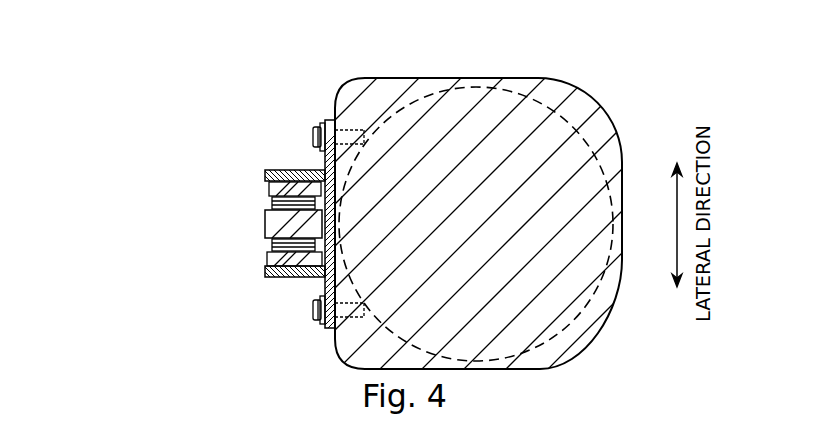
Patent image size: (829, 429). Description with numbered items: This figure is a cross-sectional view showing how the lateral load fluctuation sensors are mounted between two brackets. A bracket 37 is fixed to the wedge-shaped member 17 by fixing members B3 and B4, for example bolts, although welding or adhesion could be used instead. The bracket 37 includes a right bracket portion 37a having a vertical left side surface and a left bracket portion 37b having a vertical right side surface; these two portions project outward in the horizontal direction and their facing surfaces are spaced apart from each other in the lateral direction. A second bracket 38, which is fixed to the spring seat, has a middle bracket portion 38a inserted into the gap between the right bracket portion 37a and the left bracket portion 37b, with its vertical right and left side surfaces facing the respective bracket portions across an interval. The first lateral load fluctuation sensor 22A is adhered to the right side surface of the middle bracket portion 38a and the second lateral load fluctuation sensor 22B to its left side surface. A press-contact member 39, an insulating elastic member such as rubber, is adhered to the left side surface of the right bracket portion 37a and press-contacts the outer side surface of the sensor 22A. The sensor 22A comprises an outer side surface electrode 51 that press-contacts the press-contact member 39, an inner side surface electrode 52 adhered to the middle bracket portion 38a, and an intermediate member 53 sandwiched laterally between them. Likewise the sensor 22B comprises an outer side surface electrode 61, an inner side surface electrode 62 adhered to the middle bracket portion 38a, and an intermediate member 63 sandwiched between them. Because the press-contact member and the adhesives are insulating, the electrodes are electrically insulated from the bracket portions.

The wedge-shaped member 17 is at (453, 78).
The bracket 37 is at (330, 118).
The right bracket portion 37a is at (302, 170).
The left bracket portion 37b is at (303, 279).
The bracket 38 is at (222, 175).
The middle bracket portion 38a is at (270, 226).
The press-contact member 39 is at (270, 266).
The first lateral load fluctuation sensor 22A is at (230, 184).
The second lateral load fluctuation sensor 22B is at (230, 265).
The outer side surface electrode 51 is at (272, 201).
The inner side surface electrode 52 is at (272, 210).
The intermediate member 53 is at (272, 204).
The outer side surface electrode 61 is at (270, 257).
The inner side surface electrode 62 is at (272, 244).
The intermediate member 63 is at (272, 250).
The fixing member B3 is at (312, 131).
The fixing member B4 is at (312, 318).